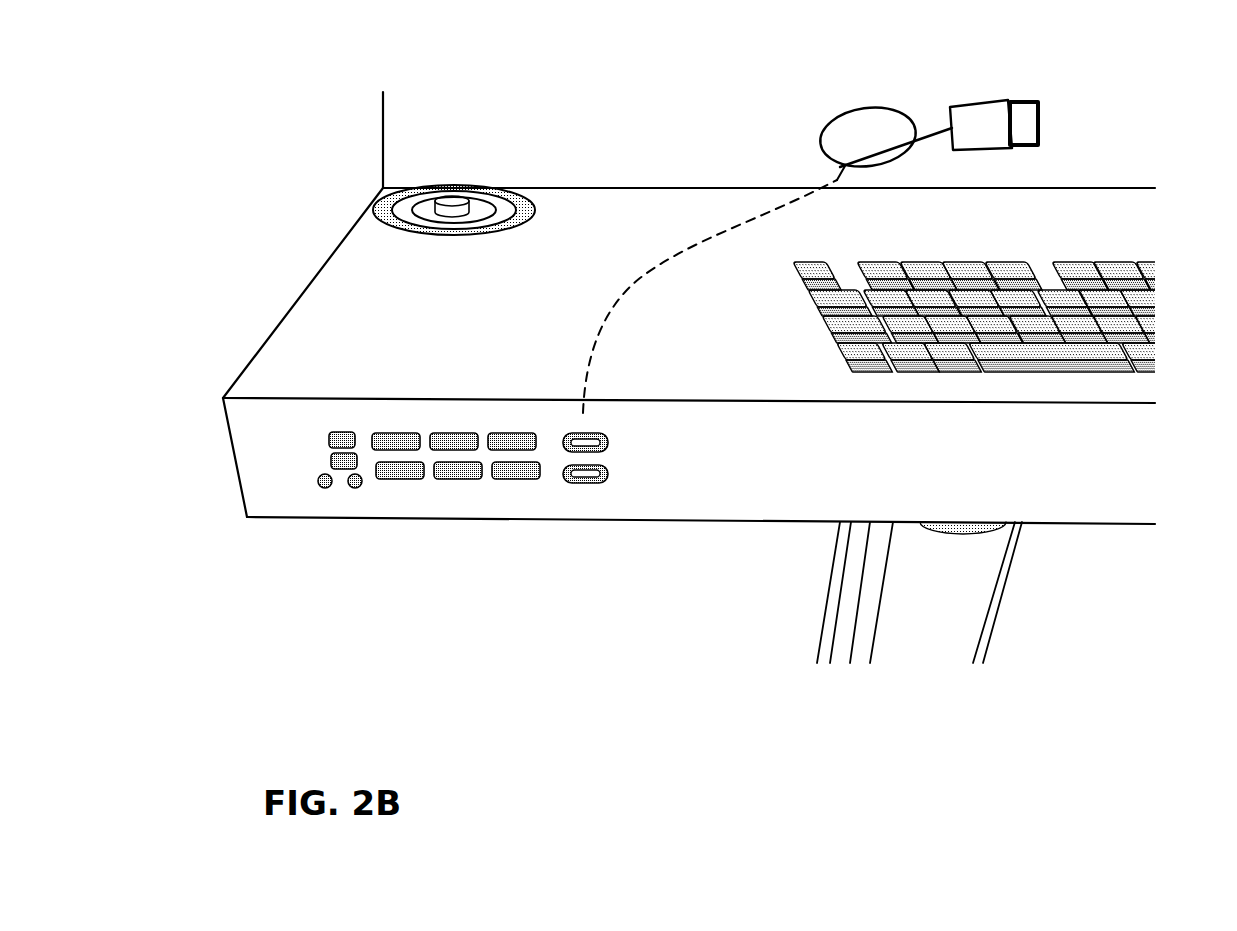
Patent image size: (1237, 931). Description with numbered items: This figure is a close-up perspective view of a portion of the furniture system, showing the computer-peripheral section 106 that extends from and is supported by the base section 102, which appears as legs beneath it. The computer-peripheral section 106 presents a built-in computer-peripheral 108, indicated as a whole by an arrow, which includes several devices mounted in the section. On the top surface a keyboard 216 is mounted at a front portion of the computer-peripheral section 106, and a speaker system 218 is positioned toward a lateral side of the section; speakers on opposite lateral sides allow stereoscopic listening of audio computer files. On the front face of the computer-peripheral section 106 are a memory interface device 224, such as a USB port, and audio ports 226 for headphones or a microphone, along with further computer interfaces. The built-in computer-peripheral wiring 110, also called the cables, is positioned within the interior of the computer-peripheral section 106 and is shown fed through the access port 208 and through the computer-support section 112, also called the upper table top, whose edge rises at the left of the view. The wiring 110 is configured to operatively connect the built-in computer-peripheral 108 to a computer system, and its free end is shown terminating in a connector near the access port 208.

The base section 102 is at (997, 618).
The computer-peripheral section 106 is at (637, 503).
The built-in computer-peripheral 108 is at (542, 647).
The built-in computer-peripheral wiring 110 is at (832, 178).
The computer-support section 112 is at (397, 128).
The access port 208 is at (845, 112).
The keyboard 216 is at (842, 357).
The speaker system 218 is at (413, 223).
The memory interface device 224 is at (580, 485).
The audio port 226 is at (323, 491).